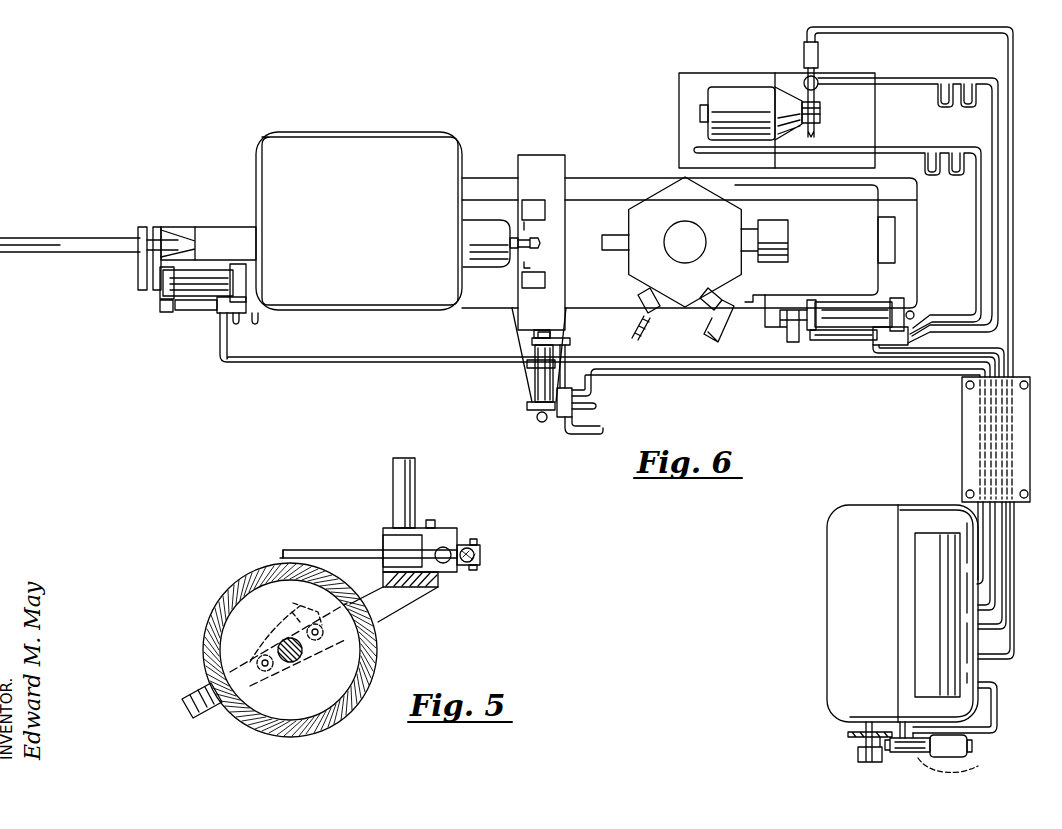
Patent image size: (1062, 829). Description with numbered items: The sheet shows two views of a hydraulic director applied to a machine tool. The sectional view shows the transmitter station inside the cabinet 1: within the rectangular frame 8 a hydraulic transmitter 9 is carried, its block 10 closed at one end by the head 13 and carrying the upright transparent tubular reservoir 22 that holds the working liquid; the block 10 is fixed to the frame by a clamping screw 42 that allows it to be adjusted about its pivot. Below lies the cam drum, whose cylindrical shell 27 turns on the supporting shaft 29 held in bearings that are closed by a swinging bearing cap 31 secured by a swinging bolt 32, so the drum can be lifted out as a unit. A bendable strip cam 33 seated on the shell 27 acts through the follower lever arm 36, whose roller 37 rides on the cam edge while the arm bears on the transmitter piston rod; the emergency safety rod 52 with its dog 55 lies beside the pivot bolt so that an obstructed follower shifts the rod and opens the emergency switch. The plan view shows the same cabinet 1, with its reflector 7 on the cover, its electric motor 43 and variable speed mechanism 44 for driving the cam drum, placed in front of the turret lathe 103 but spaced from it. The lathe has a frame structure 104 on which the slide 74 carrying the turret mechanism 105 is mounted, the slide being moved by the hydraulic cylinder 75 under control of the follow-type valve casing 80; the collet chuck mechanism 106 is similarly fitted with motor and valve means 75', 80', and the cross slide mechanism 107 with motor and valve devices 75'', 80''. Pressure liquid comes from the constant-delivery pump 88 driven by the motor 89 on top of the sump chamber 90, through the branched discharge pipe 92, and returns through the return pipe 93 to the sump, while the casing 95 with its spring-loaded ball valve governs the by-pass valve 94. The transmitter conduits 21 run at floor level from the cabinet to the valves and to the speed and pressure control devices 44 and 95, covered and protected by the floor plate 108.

In FIG. 6, the cabinet 1 is at (827, 560).
In FIG. 6, the reflector 7 is at (927, 533).
In FIG. 5, the rectangular frame 8 is at (395, 606).
In FIG. 5, the hydraulic transmitter 9 is at (376, 539).
In FIG. 5, the block 10 is at (453, 528).
In FIG. 5, the head 13 is at (390, 538).
In FIG. 6, the conduit 21 is at (722, 368).
In FIG. 5, the tubular reservoir 22 is at (395, 470).
In FIG. 5, the cylindrical shell 27 is at (354, 660).
In FIG. 5, the supporting shaft 29 is at (296, 663).
In FIG. 5, the bearing cap 31 is at (272, 625).
In FIG. 5, the swinging bolt 32 is at (292, 606).
In FIG. 5, the cam 33 is at (360, 667).
In FIG. 5, the lever arm 36 is at (318, 550).
In FIG. 5, the roller 37 is at (283, 558).
In FIG. 5, the clamping screw 42 is at (432, 520).
In FIG. 6, the electric motor 43 is at (970, 746).
In FIG. 6, the variable speed mechanism 44 is at (975, 766).
In FIG. 5, the rod 52 is at (473, 572).
In FIG. 5, the dog 55 is at (480, 543).
In FIG. 6, the machine element 74 is at (840, 242).
In FIG. 6, the cylinder 75 is at (839, 303).
In FIG. 6, the motor means 75' is at (200, 302).
In FIG. 6, the motor device 75'' is at (526, 365).
In FIG. 6, the valve casing 80 is at (873, 361).
In FIG. 6, the control valve means 80' is at (221, 326).
In FIG. 6, the control valve device 80'' is at (565, 400).
In FIG. 6, the pump 88 is at (820, 110).
In FIG. 6, the motor 89 is at (720, 88).
In FIG. 6, the sump chamber 90 is at (679, 92).
In FIG. 6, the discharge pipe 92 is at (915, 79).
In FIG. 6, the return pipe 93 is at (906, 147).
In FIG. 6, the by-pass valve 94 is at (804, 78).
In FIG. 6, the casing 95 is at (803, 52).
In FIG. 6, the turret lathe 103 is at (497, 160).
In FIG. 6, the frame structure 104 is at (600, 180).
In FIG. 6, the turret mechanism 105 is at (742, 220).
In FIG. 6, the collet chuck mechanism 106 is at (140, 255).
In FIG. 6, the cross slide mechanism 107 is at (565, 264).
In FIG. 6, the floor plate 108 is at (960, 442).